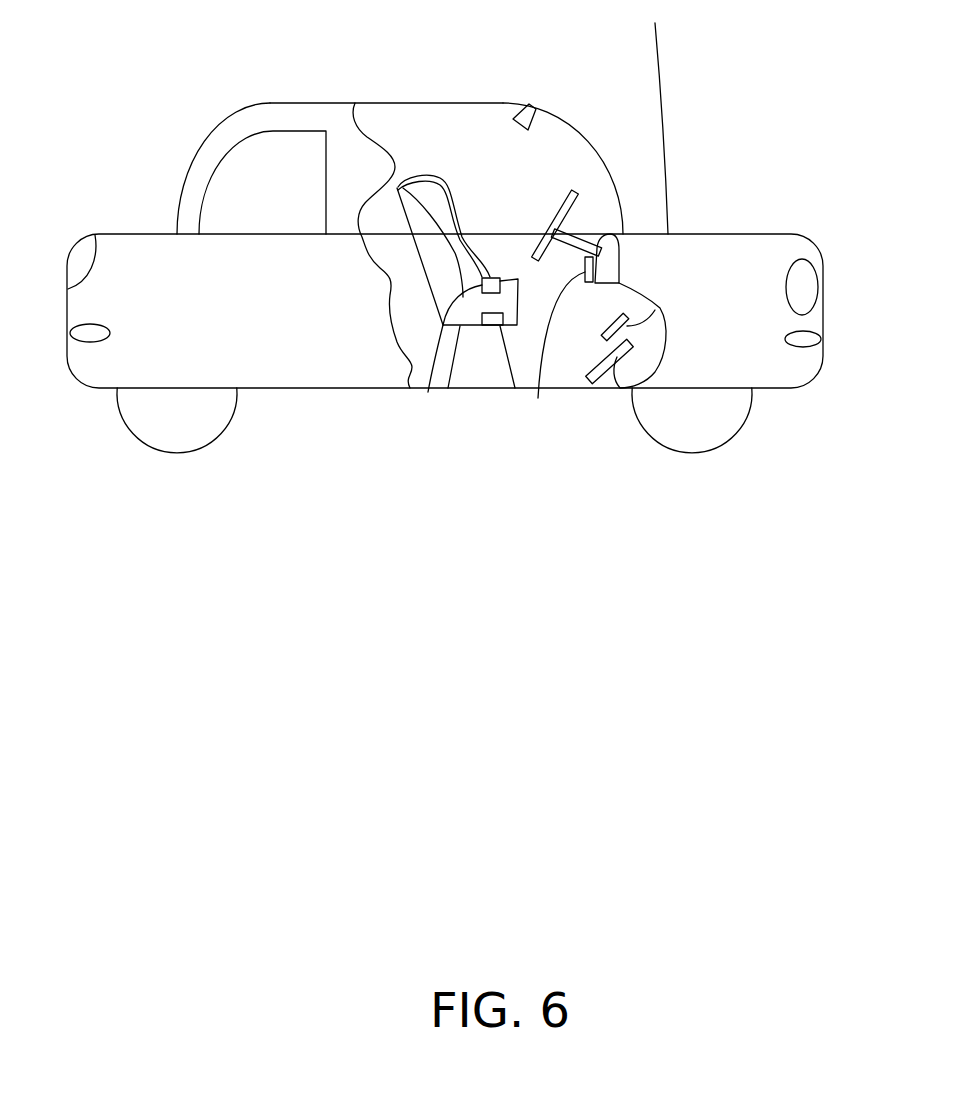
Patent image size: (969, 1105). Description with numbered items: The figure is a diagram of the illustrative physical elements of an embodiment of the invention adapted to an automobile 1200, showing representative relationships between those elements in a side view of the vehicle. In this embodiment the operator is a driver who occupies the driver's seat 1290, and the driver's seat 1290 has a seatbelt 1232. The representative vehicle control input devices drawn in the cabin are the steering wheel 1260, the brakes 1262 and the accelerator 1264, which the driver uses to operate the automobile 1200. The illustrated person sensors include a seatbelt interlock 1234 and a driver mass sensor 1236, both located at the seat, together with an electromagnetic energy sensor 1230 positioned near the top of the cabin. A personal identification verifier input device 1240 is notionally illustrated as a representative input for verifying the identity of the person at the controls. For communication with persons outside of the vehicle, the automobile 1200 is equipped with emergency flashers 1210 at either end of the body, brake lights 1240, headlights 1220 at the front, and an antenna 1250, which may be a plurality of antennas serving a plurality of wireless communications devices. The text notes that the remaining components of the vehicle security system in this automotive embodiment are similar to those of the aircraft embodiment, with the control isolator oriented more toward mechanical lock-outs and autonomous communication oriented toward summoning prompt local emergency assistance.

The automobile 1200 is at (280, 359).
The emergency flashers 1210 is at (78, 325).
The headlights 1220 is at (817, 301).
The electromagnetic energy sensor 1230 is at (517, 108).
The seatbelt 1232 is at (450, 193).
The seatbelt interlock 1234 is at (424, 376).
The driver mass sensor 1236 is at (497, 326).
The personal identification verifier input device 1240 is at (76, 256).
The antenna 1250 is at (663, 49).
The steering wheel 1260 is at (575, 190).
The brakes 1262 is at (612, 318).
The accelerator 1264 is at (604, 368).
The driver's seat 1290 is at (402, 217).